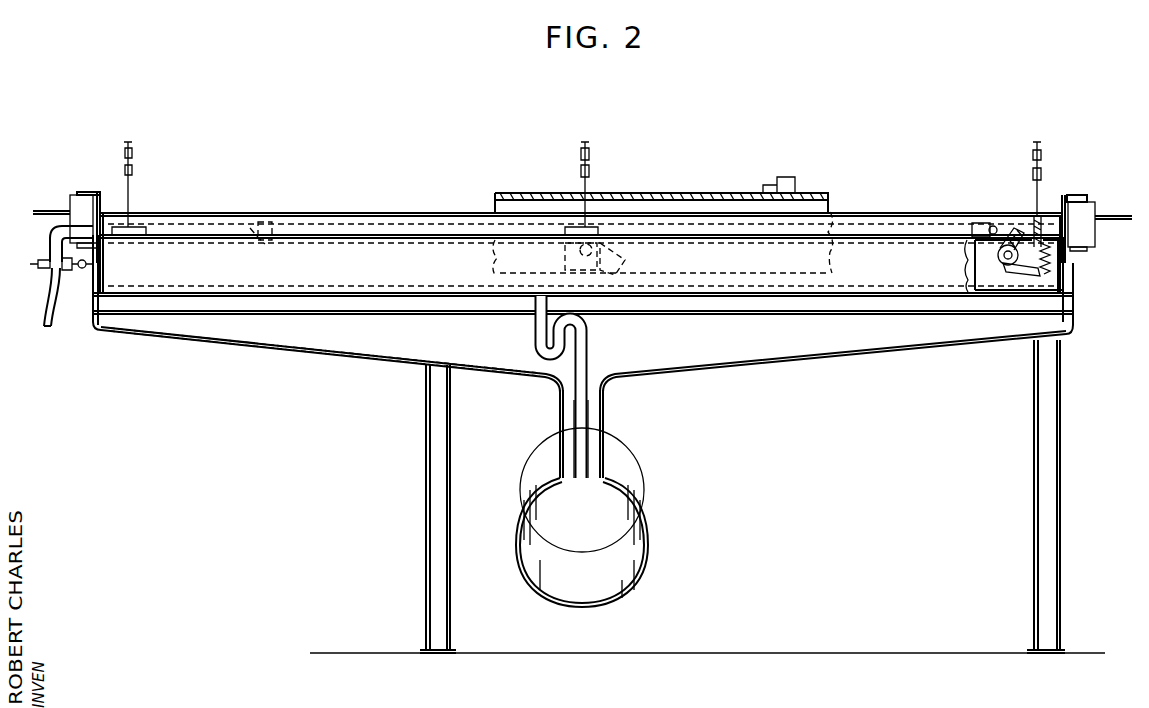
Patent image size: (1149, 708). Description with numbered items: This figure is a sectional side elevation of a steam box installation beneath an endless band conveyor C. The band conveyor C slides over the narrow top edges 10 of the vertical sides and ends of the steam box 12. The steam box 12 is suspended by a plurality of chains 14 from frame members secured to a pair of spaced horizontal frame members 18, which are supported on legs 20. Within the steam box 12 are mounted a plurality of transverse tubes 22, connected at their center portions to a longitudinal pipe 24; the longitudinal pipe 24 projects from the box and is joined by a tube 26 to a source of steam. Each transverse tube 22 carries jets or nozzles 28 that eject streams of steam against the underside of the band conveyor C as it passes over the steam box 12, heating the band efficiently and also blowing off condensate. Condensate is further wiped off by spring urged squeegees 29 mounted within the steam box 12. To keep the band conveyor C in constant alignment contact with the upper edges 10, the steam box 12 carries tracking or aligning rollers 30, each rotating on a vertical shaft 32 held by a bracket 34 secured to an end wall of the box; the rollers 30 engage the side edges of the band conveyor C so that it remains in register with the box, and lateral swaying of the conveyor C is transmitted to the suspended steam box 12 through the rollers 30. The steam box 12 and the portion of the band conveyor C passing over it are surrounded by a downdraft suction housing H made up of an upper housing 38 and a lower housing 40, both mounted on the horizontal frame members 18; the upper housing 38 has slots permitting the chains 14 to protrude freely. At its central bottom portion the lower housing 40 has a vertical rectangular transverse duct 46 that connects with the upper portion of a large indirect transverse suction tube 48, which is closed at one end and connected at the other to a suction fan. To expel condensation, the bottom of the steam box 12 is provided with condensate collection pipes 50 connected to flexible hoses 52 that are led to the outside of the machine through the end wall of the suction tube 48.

The top edges 10 is at (313, 213).
The steam box 12 is at (890, 275).
The chains 14 is at (135, 152).
The horizontal frame members 18 is at (1063, 300).
The legs 20 is at (430, 528).
The transverse tubes 22 is at (268, 224).
The longitudinal pipe 24 is at (400, 222).
The tube 26 is at (46, 312).
The jets or nozzles 28 is at (262, 222).
The spring urged squeegees 29 is at (592, 228).
The tracking or aligning rollers 30 is at (80, 210).
The vertical shaft 32 is at (92, 190).
The bracket 34 is at (88, 192).
The upper housing 38 is at (700, 197).
The lower housing 40 is at (700, 378).
The vertical rectangular transverse duct 46 is at (605, 408).
The indirect transverse suction tube 48 is at (622, 477).
The condensate collection pipes 50 is at (538, 338).
The flexible hoses 52 is at (576, 470).
The band conveyor C is at (40, 211).
The downdraft suction housing H is at (754, 180).